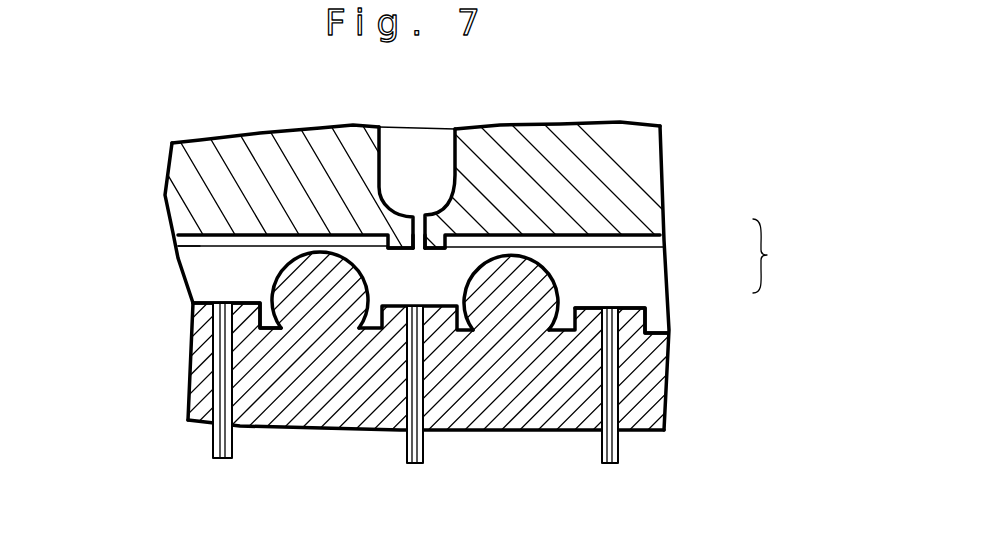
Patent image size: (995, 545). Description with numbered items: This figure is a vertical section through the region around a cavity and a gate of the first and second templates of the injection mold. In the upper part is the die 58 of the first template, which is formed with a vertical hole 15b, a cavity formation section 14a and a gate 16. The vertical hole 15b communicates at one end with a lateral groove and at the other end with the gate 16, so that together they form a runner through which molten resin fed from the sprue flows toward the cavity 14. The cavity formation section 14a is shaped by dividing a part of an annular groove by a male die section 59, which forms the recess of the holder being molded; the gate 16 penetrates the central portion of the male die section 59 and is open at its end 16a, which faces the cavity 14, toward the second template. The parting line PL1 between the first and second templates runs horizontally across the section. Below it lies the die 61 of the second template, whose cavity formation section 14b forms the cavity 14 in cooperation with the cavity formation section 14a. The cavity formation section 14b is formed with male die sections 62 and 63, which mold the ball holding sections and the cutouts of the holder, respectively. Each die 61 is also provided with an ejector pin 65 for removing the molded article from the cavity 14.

The die 58 is at (633, 193).
The vertical hole 15b is at (453, 170).
The gate 16 is at (425, 232).
The end of the gate 16a is at (442, 248).
The cavity 14 is at (785, 256).
The cavity formation section 14a is at (642, 238).
The cavity formation section 14b is at (637, 282).
The male die section 59 is at (393, 252).
The die 61 is at (637, 387).
The male die section 62 is at (300, 278).
The male die section 63 is at (207, 302).
The ejector pin 65 is at (218, 443).
The parting line PL1 is at (177, 247).